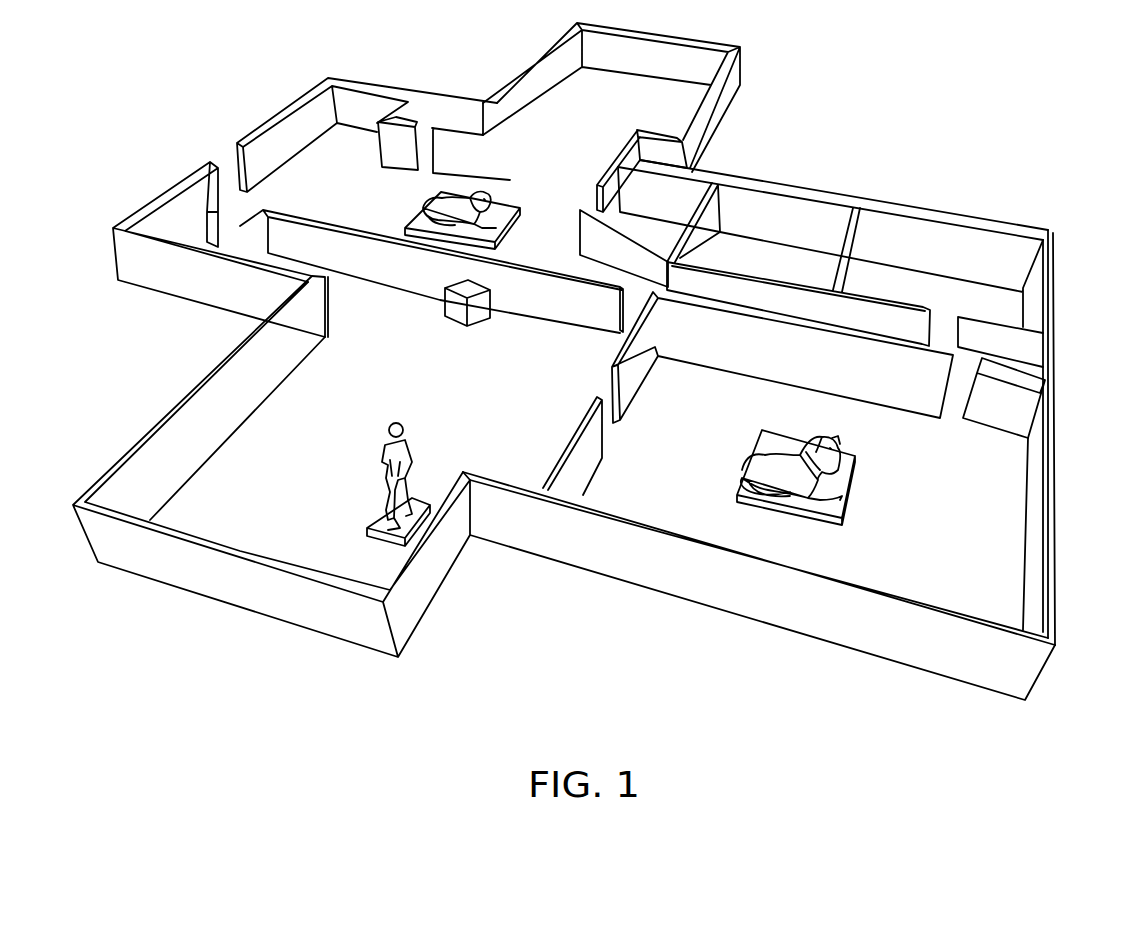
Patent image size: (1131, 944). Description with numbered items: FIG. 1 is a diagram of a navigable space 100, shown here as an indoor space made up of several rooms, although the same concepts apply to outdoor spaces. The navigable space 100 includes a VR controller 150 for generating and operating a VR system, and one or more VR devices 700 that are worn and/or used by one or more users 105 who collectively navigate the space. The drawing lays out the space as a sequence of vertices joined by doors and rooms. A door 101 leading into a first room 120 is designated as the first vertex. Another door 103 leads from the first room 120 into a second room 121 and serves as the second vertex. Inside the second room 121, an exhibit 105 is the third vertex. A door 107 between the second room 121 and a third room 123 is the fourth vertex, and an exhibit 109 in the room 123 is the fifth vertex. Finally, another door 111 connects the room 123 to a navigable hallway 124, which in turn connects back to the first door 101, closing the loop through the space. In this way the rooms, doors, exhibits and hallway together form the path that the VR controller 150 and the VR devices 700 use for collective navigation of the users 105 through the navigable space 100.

The navigable space 100 is at (898, 92).
The door 101 is at (230, 175).
The door 103 is at (638, 305).
The exhibit 105 is at (380, 460).
The door 107 is at (608, 437).
The exhibit 109 is at (852, 497).
The door 111 is at (958, 392).
The first room 120 is at (347, 137).
The second room 121 is at (498, 470).
The third room 123 is at (1013, 538).
The navigable hallway 124 is at (890, 325).
The VR controller 150 is at (453, 323).
The VR device 700 is at (405, 432).